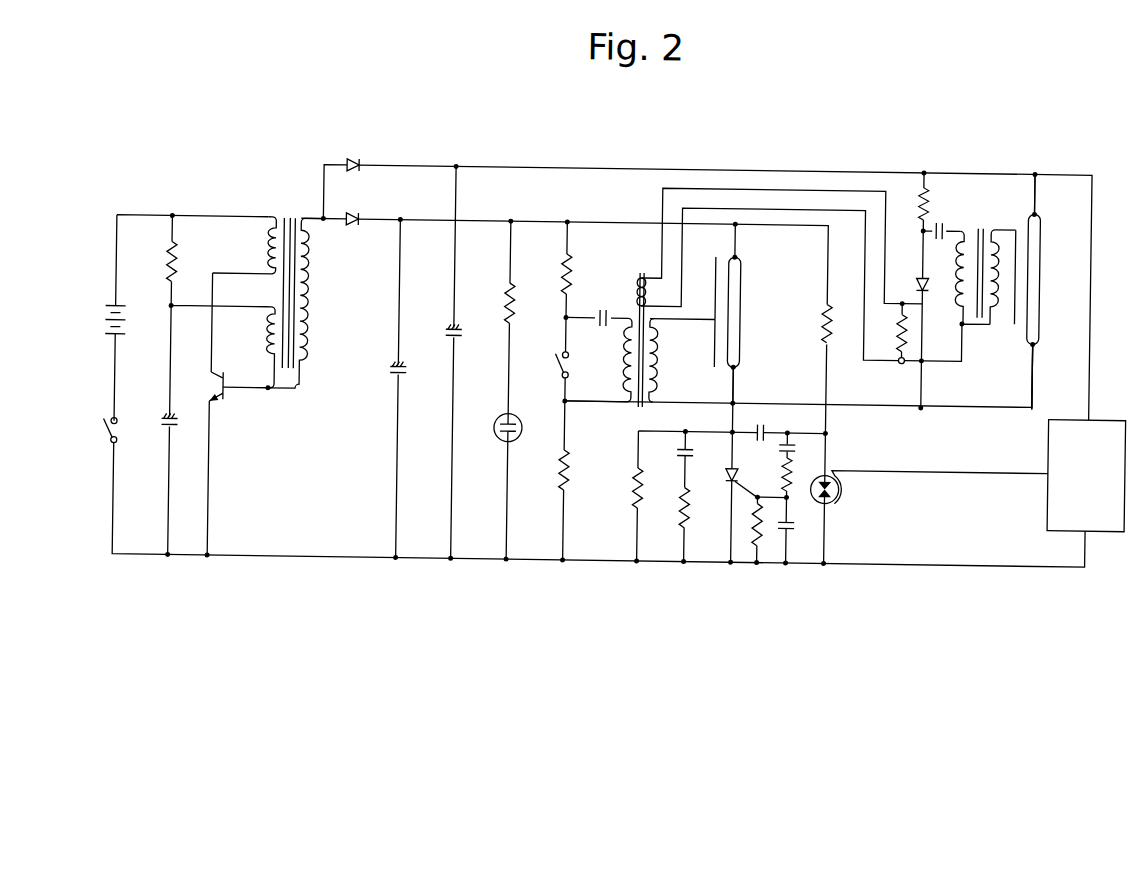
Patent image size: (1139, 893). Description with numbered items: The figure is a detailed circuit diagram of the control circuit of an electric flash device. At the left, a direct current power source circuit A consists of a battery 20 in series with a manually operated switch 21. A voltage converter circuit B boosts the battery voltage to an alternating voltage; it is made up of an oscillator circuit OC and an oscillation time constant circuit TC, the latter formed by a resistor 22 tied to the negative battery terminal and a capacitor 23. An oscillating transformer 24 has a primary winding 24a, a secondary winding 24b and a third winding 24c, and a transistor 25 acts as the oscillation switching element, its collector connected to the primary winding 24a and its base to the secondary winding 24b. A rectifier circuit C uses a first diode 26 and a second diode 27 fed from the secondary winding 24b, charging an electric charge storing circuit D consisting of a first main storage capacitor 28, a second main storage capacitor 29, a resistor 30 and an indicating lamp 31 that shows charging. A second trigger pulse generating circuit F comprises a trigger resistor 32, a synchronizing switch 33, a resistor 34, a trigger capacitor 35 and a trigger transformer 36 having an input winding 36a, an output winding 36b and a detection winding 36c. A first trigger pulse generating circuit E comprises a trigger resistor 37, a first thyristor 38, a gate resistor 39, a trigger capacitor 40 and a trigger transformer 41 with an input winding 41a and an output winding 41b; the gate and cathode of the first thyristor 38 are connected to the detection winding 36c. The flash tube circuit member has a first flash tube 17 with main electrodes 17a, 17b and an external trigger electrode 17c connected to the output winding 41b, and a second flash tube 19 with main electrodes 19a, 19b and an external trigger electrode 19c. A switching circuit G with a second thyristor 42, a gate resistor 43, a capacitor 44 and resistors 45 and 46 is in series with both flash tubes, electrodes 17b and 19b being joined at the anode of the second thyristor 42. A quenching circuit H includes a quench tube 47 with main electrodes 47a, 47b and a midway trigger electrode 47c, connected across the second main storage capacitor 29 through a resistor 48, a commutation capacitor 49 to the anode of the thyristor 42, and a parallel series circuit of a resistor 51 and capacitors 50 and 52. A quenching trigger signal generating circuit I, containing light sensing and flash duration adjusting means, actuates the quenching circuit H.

The first flash tube 17 is at (1049, 292).
The main current conducting electrode 17a is at (1039, 210).
The main current conducting electrode 17b is at (1033, 332).
The trigger electrode 17c is at (1016, 305).
The second flash tube 19 is at (735, 313).
The main current conducting electrode 19a is at (742, 257).
The main current conducting electrode 19b is at (740, 366).
The trigger electrode 19c is at (714, 304).
The battery 20 is at (112, 328).
The manually operated switch 21 is at (109, 448).
The resistor 22 is at (168, 271).
The capacitor 23 is at (167, 437).
The oscillating transformer 24 is at (283, 275).
The primary winding 24a is at (270, 269).
The secondary winding 24b is at (301, 311).
The third winding 24c is at (270, 347).
The transistor 25 is at (213, 402).
The first diode 26 is at (353, 162).
The second diode 27 is at (355, 219).
The first main storage capacitor 28 is at (450, 341).
The second main storage capacitor 29 is at (393, 372).
The resistor 30 is at (507, 323).
The indicating lamp 31 is at (505, 441).
The trigger resistor 32 is at (560, 276).
The synchronizing switch 33 is at (561, 366).
The resistor 34 is at (561, 470).
The trigger capacitor 35 is at (602, 311).
The trigger transformer 36 is at (636, 340).
The input winding 36a is at (624, 360).
The output winding 36b is at (662, 378).
The detection winding 36c is at (640, 276).
The trigger resistor 37 is at (918, 204).
The first thyristor 38 is at (913, 280).
The gate resistor 39 is at (900, 334).
The trigger capacitor 40 is at (942, 223).
The trigger transformer 41 is at (967, 278).
The input winding 41a is at (958, 275).
The output winding 41b is at (997, 300).
The second thyristor 42 is at (723, 457).
The gate resistor 43 is at (756, 522).
The capacitor 44 is at (681, 454).
The resistor 45 is at (681, 506).
The resistor 46 is at (634, 500).
The quench tube 47 is at (929, 498).
The main electrode 47a is at (834, 474).
The main electrode 47b is at (828, 505).
The trigger electrode 47c is at (845, 486).
The resistor 48 is at (822, 331).
The commutation capacitor 49 is at (761, 422).
The capacitor 50 is at (792, 446).
The resistor 51 is at (783, 476).
The capacitor 52 is at (790, 524).
The direct current power source circuit A is at (107, 364).
The voltage converter circuit B is at (246, 216).
The rectifier circuit C is at (387, 164).
The electric charge storing circuit D is at (480, 242).
The first trigger pulse generating circuit E is at (970, 210).
The second trigger pulse generating circuit F is at (602, 240).
The switching circuit G is at (713, 540).
The quenching circuit H is at (843, 553).
The quenching trigger signal generating circuit I is at (1098, 427).
The oscillator circuit OC is at (205, 248).
The oscillation time constant circuit TC is at (150, 354).